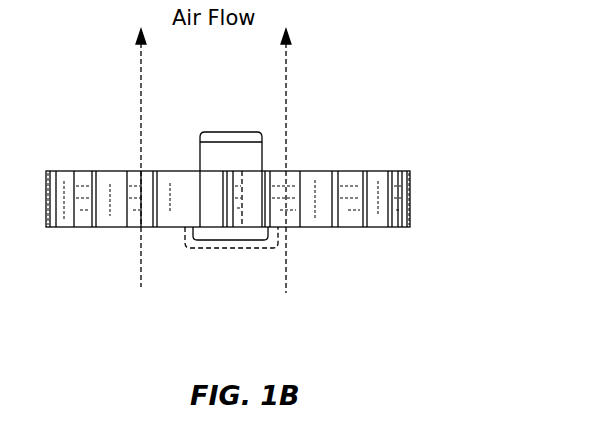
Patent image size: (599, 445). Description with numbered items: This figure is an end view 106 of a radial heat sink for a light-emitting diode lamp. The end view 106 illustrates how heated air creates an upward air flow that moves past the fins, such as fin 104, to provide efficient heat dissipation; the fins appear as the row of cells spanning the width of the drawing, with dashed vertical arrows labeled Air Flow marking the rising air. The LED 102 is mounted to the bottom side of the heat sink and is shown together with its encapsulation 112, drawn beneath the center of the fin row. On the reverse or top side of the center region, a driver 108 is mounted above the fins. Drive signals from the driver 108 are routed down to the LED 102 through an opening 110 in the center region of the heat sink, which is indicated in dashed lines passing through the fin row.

The LED 102 is at (238, 243).
The fin 104 is at (322, 171).
The end view 106 is at (100, 136).
The driver 108 is at (240, 131).
The opening 110 is at (242, 193).
The encapsulation 112 is at (203, 249).